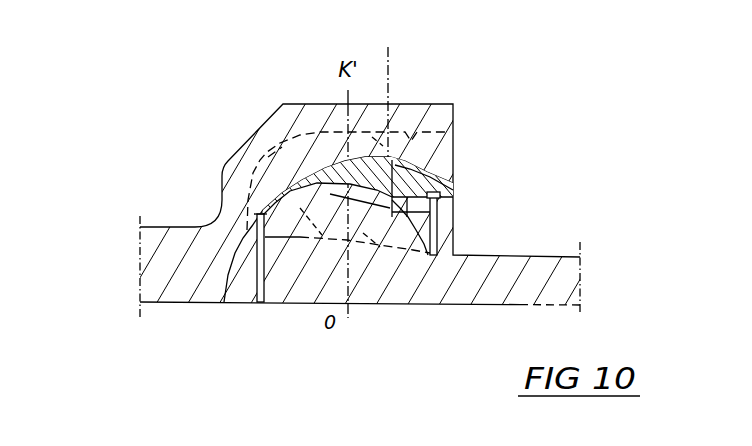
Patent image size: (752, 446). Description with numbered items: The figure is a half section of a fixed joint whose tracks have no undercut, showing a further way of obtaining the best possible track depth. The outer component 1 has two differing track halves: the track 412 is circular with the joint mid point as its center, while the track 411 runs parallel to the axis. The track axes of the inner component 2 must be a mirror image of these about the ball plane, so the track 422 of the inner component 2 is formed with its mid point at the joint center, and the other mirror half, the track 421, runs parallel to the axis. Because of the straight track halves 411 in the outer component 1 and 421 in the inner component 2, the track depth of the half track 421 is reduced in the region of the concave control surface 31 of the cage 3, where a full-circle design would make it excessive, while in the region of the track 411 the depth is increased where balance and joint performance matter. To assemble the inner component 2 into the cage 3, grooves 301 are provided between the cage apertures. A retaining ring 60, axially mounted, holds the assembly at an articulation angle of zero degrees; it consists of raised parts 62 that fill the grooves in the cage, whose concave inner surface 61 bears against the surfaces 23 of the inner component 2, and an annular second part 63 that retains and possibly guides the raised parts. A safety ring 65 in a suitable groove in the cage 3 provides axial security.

The outer component 1 is at (234, 163).
The inner component 2 is at (556, 269).
The cage 3 is at (455, 165).
The surfaces of inner component 23 is at (407, 222).
The concave control surface 31 is at (262, 218).
The retaining ring 60 is at (603, 159).
The concave inner surface 61 is at (394, 216).
The raised parts 62 is at (405, 218).
The second part of ring 63 is at (411, 216).
The safety ring 65 is at (455, 185).
The grooves 301 is at (393, 104).
The track 411 is at (424, 105).
The track 412 is at (267, 108).
The track 421 is at (257, 275).
The track 422 is at (386, 216).